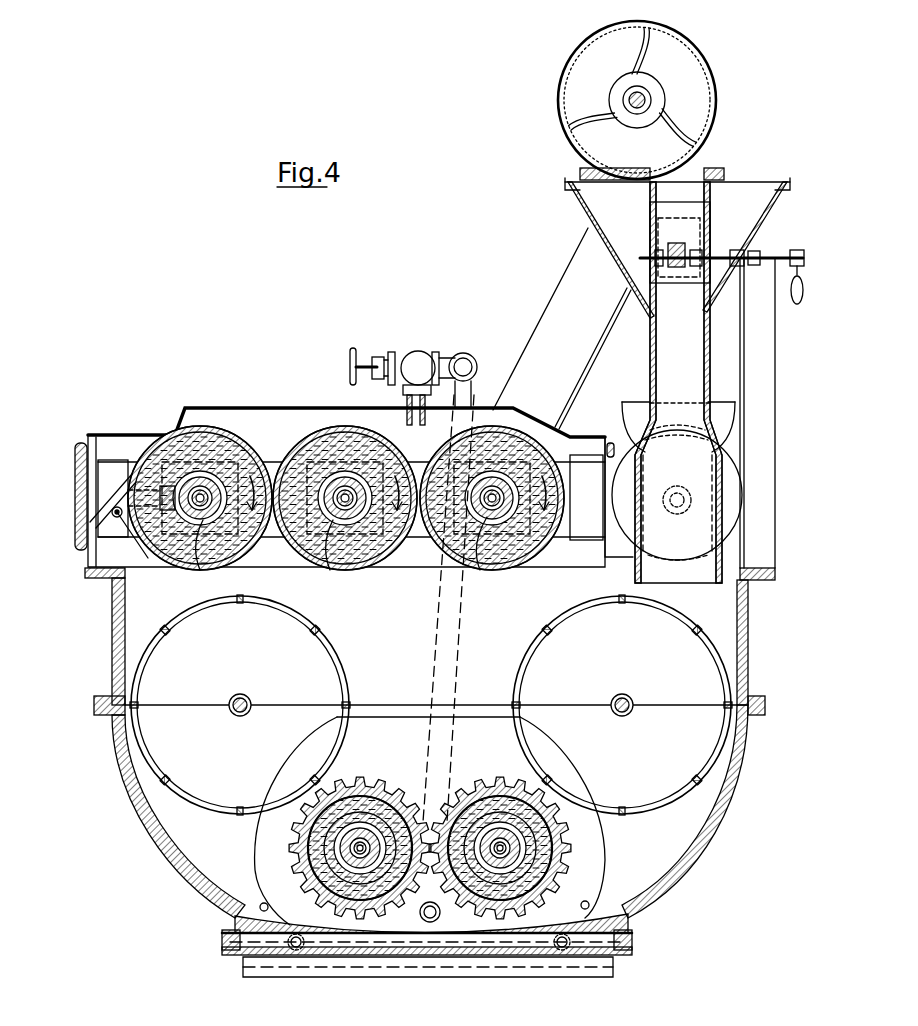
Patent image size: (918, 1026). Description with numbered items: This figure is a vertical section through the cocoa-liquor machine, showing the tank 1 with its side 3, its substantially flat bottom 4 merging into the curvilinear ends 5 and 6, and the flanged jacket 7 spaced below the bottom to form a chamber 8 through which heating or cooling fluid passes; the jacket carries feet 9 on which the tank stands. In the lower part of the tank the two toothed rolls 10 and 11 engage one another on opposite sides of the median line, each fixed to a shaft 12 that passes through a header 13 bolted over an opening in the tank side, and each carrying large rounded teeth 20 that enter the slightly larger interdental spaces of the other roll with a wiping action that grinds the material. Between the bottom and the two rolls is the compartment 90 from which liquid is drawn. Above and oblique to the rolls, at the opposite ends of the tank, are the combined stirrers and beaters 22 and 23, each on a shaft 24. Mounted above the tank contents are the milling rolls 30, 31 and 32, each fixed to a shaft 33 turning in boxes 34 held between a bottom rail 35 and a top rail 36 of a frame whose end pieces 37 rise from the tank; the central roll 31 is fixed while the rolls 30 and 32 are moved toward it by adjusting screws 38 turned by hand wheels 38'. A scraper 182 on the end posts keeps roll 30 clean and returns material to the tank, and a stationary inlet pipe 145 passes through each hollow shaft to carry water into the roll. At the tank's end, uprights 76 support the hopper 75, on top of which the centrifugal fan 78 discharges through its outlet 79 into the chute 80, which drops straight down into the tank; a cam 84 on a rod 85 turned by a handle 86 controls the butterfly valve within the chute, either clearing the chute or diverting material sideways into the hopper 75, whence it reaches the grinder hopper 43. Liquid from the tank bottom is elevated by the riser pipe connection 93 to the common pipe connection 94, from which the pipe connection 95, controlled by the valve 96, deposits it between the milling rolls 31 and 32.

The tank 1 is at (776, 654).
The side of tank 3 is at (453, 608).
The bottom of tank 4 is at (452, 940).
The curvilinear end 5 is at (146, 826).
The curvilinear end 6 is at (733, 786).
The flanged jacket 7 is at (362, 958).
The chamber 8 is at (330, 945).
The feet 9 is at (278, 977).
The roll 10 is at (298, 853).
The roll 11 is at (566, 853).
The shaft 12 is at (300, 838).
The header 13 is at (488, 720).
The teeth 20 is at (363, 782).
The combined stirrer and beater 22 is at (336, 660).
The combined stirrer and beater 23 is at (563, 613).
The shaft 24 is at (243, 695).
The milling roll 30 is at (198, 570).
The milling roll 31 is at (356, 568).
The milling roll 32 is at (484, 573).
The shaft 33 is at (222, 475).
The box 34 is at (272, 574).
The bottom rail 35 is at (292, 560).
The top rail 36 is at (269, 447).
The end piece 37 is at (137, 567).
The adjusting screw 38 is at (354, 454).
The hand wheel 38' is at (332, 473).
The hopper 43 is at (722, 412).
The hopper 75 is at (771, 212).
The upright 76 is at (789, 341).
The centrifugal fan 78 is at (711, 83).
The outlet 79 is at (690, 182).
The chute 80 is at (700, 390).
The cam 84 is at (685, 243).
The rod 85 is at (713, 256).
The handle 86 is at (804, 278).
The compartment 90 is at (425, 919).
The pipe connection 93 is at (473, 383).
The pipe connection 94 is at (462, 353).
The pipe connection 95 is at (406, 412).
The valve 96 is at (400, 353).
The inlet pipe 145 is at (203, 520).
The scraper 182 is at (114, 517).